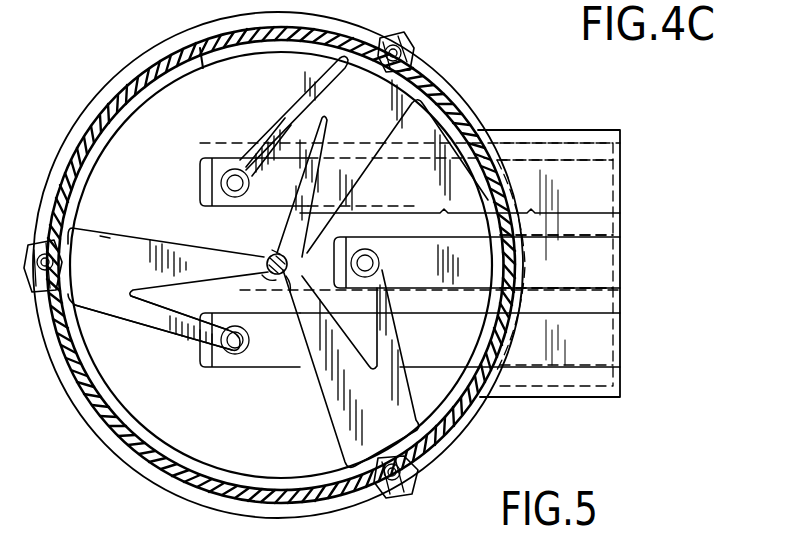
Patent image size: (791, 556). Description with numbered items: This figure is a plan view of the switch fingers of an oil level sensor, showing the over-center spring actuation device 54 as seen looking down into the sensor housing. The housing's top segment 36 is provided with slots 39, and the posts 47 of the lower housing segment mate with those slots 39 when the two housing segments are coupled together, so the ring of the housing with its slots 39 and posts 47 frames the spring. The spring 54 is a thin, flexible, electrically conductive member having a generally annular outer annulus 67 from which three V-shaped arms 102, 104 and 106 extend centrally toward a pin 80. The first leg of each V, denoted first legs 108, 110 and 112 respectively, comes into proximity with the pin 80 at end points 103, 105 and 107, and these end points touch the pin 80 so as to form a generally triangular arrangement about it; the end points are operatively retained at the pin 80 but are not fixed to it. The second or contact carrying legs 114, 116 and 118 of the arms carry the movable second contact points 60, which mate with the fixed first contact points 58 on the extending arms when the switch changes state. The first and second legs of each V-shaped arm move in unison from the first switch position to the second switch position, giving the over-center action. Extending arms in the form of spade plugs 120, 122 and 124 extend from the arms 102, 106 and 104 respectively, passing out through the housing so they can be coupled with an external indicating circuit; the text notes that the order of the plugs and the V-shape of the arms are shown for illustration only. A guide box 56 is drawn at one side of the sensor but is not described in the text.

The top segment 36 is at (330, 26).
The slots 39 is at (397, 36).
The posts 47 is at (388, 60).
The over-center spring actuation device 54 is at (331, 68).
The guide box 56 is at (633, 214).
The fixed first contact points 58 is at (232, 170).
The movable second contact points 60 is at (235, 352).
The outer annulus 67 is at (203, 68).
The pin 80 is at (288, 268).
The V-shaped arm 102 is at (100, 212).
The end point 103 is at (256, 258).
The V-shaped arm 104 is at (414, 118).
The end point 105 is at (275, 250).
The V-shaped arm 106 is at (337, 461).
The end point 107 is at (290, 292).
The first leg 108 is at (268, 278).
The first leg 110 is at (313, 236).
The first leg 112 is at (316, 278).
The contact carrying leg 114 is at (198, 332).
The contact carrying leg 116 is at (250, 162).
The contact carrying leg 118 is at (372, 268).
The spade plug 120 is at (613, 305).
The spade plug 122 is at (615, 238).
The spade plug 124 is at (613, 160).